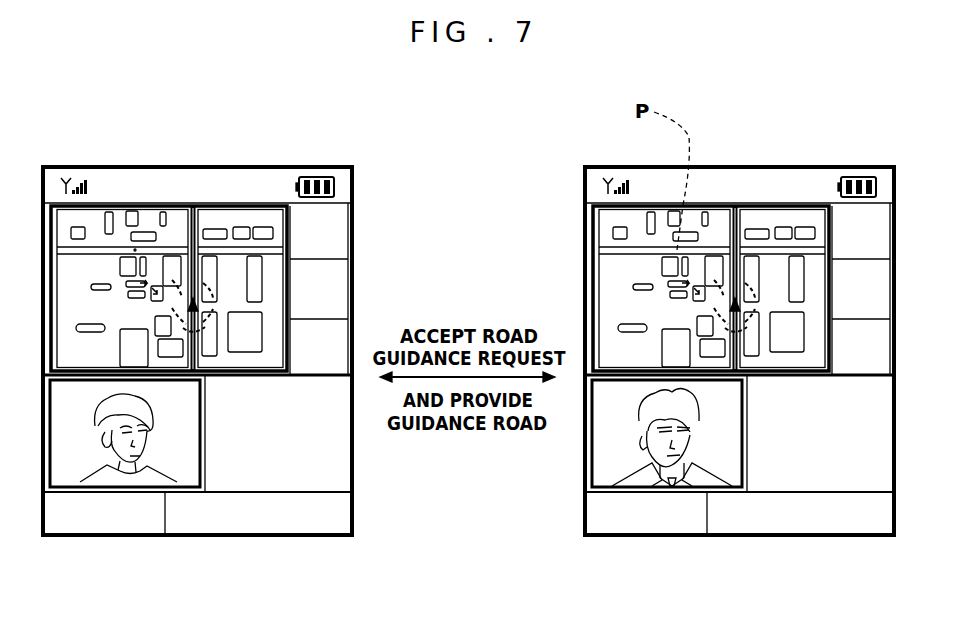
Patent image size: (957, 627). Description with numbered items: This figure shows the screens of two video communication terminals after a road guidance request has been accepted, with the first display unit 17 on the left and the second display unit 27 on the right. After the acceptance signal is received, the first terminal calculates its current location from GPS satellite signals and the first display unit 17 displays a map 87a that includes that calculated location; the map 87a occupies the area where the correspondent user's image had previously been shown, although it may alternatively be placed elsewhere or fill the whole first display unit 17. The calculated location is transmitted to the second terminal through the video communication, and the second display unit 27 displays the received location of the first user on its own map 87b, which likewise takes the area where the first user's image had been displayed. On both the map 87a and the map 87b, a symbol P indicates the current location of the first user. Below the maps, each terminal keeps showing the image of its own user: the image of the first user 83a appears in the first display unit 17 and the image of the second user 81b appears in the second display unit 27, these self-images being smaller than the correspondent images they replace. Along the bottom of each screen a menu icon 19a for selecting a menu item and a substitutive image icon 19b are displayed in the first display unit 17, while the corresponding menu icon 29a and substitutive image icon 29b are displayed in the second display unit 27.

The first display unit 17 is at (270, 167).
The second display unit 27 is at (739, 317).
The symbol indicating current location of first user P is at (135, 250).
The map 87a is at (275, 282).
The map 87b is at (655, 288).
The menu icon 19a is at (72, 523).
The substitutive image icon 19b is at (318, 523).
The image of the first user 83a is at (190, 478).
The menu icon 29a is at (646, 547).
The substitutive image icon 29b is at (800, 547).
The image of the second user 81b is at (732, 478).